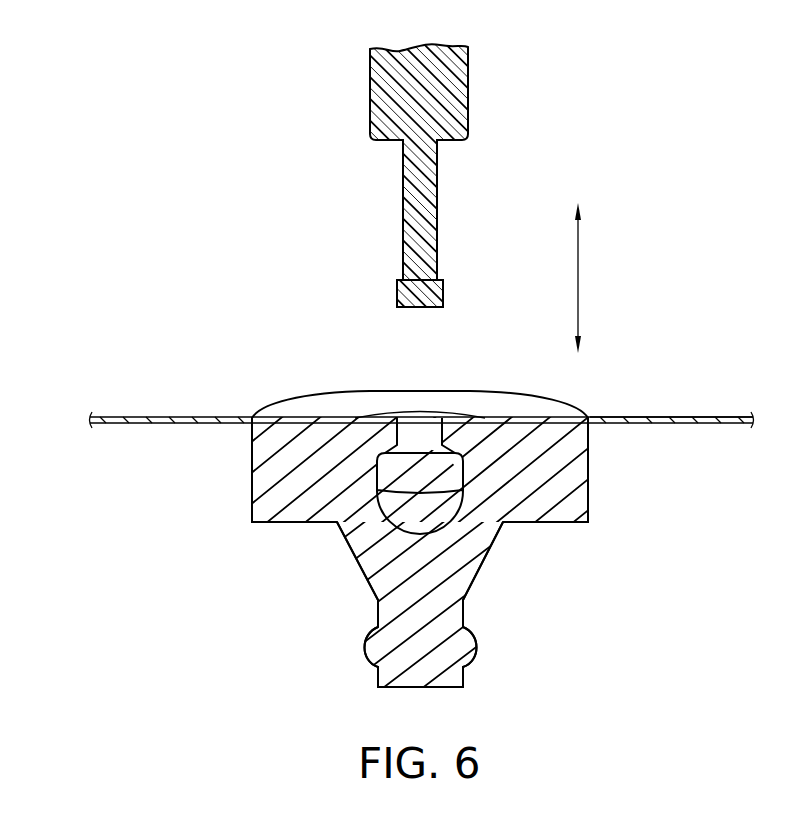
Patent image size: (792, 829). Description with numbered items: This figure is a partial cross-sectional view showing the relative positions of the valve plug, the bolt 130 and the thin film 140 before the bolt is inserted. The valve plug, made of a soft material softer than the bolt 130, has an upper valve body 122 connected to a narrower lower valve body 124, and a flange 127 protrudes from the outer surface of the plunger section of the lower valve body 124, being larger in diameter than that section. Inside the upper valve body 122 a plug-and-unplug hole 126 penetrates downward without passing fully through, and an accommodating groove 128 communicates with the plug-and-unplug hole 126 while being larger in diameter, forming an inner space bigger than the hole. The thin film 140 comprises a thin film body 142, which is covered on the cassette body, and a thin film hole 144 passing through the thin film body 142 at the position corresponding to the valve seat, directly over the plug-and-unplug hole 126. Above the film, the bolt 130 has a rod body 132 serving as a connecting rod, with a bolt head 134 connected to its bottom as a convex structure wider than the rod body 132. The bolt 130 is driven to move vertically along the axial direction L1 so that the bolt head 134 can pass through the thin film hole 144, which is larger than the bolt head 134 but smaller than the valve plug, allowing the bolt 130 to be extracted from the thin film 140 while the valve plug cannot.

The upper valve body 122 is at (588, 478).
The lower valve body 124 is at (534, 573).
The plug-and-unplug hole 126 is at (417, 478).
The flange 127 is at (477, 647).
The accommodating groove 128 is at (414, 414).
The bolt 130 is at (483, 161).
The rod body 132 is at (405, 202).
The bolt head 134 is at (397, 293).
The thin film 140 is at (650, 400).
The thin film body 142 is at (720, 416).
The thin film hole 144 is at (457, 407).
The axial direction L1 is at (580, 278).